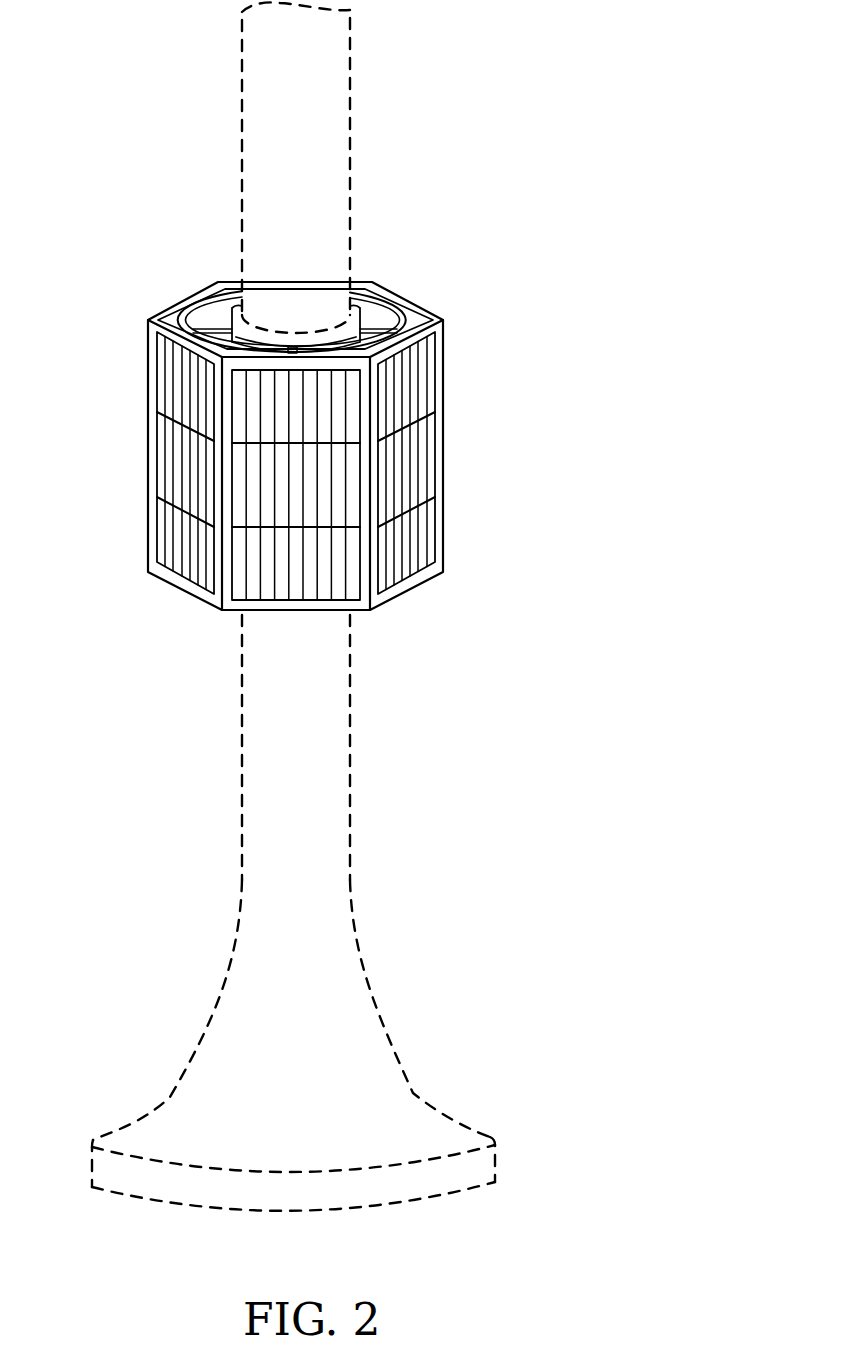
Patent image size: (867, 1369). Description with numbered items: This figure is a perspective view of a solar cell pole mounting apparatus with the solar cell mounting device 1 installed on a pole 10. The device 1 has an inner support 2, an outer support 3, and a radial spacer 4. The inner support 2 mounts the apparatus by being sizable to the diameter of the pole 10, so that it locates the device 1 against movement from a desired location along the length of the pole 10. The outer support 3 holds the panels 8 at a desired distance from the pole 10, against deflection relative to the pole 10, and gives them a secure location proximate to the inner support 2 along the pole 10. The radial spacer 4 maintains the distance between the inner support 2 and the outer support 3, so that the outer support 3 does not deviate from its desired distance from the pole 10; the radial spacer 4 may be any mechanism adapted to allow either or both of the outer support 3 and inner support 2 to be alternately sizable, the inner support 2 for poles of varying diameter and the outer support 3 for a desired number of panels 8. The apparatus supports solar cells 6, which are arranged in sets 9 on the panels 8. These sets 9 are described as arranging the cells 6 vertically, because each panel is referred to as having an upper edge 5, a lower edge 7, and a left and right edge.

The device 1 is at (572, 333).
The inner support 2 is at (360, 312).
The outer support 3 is at (407, 306).
The radial spacer 4 is at (215, 323).
The upper edge 5 is at (173, 303).
The solar cells 6 is at (138, 322).
The lower edge 7 is at (167, 582).
The panels 8 is at (205, 607).
The sets 9 is at (200, 495).
The pole 10 is at (367, 1088).